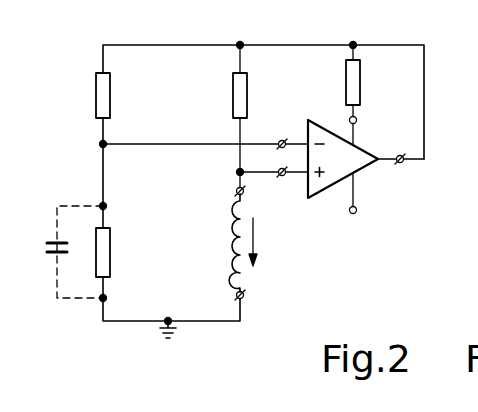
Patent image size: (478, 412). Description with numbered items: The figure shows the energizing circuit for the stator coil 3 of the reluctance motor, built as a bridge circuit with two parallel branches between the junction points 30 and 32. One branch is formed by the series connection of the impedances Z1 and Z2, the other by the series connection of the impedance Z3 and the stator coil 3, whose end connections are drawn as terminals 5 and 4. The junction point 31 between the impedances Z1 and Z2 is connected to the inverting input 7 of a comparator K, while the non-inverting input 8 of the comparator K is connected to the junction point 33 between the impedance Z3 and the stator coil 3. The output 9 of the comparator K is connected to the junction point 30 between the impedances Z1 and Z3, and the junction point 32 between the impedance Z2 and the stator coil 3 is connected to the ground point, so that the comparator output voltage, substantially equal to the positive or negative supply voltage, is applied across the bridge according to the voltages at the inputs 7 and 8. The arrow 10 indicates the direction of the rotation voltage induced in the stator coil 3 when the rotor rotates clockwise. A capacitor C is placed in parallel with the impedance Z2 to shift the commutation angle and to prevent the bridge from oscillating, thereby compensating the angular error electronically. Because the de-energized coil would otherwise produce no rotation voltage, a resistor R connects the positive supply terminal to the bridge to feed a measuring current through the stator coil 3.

The junction point 30 is at (242, 43).
The junction point 31 is at (100, 142).
The junction point 32 is at (160, 328).
The junction point 33 is at (237, 172).
The stator coil 3 is at (231, 248).
The coil terminal 4 is at (236, 295).
The coil terminal 5 is at (236, 192).
The inverting input 7 is at (281, 129).
The non-inverting input 8 is at (284, 189).
The output 9 is at (405, 170).
The arrow 10 is at (256, 240).
The impedance Z1 is at (110, 98).
The impedance Z2 is at (110, 255).
The impedance Z3 is at (247, 98).
The resistor R is at (365, 80).
The capacitor C is at (57, 257).
The comparator K is at (356, 163).